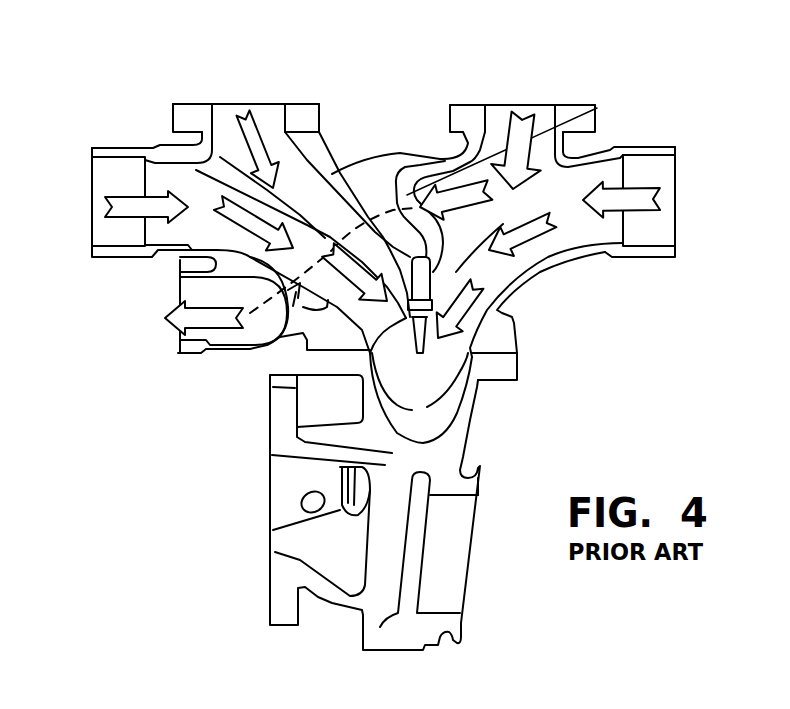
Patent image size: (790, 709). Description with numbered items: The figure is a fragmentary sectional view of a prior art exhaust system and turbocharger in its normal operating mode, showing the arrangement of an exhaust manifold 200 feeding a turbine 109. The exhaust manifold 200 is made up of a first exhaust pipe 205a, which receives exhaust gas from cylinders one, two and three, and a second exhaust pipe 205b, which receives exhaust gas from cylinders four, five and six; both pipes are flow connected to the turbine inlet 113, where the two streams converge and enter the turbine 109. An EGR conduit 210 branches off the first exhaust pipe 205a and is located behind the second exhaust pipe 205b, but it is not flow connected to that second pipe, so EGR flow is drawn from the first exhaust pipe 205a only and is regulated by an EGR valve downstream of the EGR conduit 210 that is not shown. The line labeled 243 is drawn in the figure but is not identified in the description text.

The exhaust manifold 200 is at (362, 158).
The EGR conduit 210 is at (411, 163).
The flow boundary line 243 is at (597, 108).
The first exhaust pipe 205a is at (540, 283).
The second exhaust pipe 205b is at (174, 258).
The turbine inlet 113 is at (519, 362).
The turbine 109 is at (476, 427).